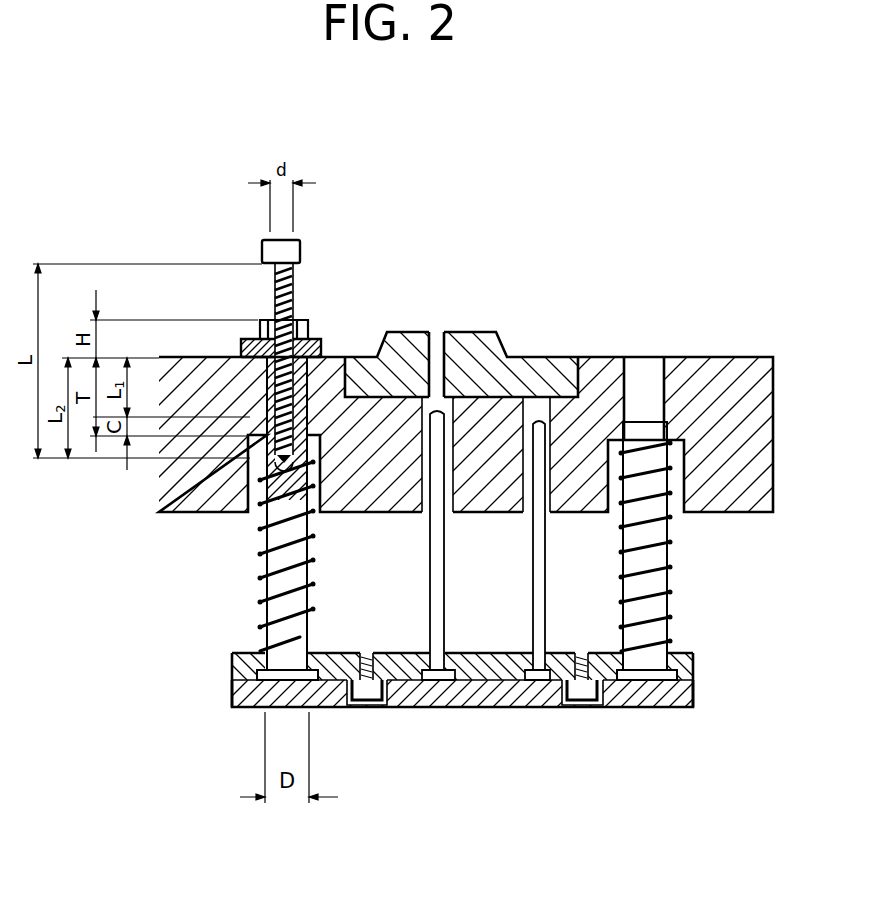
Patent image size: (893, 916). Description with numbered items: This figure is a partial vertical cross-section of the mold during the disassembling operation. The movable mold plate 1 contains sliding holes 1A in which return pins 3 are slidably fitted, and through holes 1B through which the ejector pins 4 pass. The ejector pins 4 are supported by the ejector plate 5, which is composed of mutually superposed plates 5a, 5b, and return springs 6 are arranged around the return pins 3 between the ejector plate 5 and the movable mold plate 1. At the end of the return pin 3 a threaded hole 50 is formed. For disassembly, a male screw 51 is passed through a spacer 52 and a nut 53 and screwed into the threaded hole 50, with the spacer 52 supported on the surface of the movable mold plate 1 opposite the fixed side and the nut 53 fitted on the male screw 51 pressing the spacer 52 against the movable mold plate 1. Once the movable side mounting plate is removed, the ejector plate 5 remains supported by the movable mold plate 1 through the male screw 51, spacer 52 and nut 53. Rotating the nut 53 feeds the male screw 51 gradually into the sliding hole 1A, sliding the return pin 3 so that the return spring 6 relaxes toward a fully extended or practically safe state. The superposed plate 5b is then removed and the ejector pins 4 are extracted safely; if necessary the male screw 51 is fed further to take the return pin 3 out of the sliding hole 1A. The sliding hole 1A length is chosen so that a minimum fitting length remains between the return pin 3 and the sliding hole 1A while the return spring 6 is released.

The movable mold plate 1 is at (732, 375).
The sliding hole 1A is at (268, 382).
The through hole 1B is at (427, 485).
The return pin 3 is at (275, 565).
The ejector pin 4 is at (433, 600).
The ejector plate 5 is at (486, 693).
The superposed plate 5a is at (686, 653).
The superposed plate 5b is at (670, 697).
The return spring 6 is at (280, 607).
The threaded hole 50 is at (298, 488).
The male screw 51 is at (300, 250).
The spacer 52 is at (321, 346).
The nut 53 is at (308, 325).